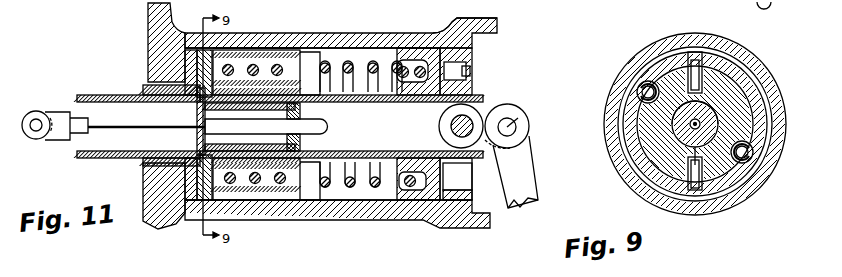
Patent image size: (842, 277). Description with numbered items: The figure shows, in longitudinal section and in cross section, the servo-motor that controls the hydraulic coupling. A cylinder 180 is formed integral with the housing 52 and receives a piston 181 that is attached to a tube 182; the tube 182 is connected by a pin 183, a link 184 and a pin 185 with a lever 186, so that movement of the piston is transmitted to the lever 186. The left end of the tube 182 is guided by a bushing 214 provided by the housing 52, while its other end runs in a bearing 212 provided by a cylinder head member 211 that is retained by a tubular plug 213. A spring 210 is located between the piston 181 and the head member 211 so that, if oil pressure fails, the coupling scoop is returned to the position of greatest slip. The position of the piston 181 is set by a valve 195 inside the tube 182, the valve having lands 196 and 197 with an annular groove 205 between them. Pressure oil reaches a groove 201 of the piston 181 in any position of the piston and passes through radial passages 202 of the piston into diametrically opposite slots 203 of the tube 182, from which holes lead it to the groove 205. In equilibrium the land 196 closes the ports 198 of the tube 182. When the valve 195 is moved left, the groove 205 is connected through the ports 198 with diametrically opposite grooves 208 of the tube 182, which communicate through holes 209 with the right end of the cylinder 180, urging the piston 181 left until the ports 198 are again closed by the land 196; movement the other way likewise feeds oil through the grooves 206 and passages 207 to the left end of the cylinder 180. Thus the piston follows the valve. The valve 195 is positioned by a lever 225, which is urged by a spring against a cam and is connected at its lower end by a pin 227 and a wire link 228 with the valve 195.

In FIG. 11, the housing 52 is at (160, 226).
In FIG. 9, the housing 52 is at (749, 263).
In FIG. 11, the cylinder 180 is at (375, 212).
In FIG. 9, the cylinder 180 is at (722, 40).
In FIG. 11, the piston 181 is at (323, 47).
In FIG. 9, the piston 181 is at (760, 80).
In FIG. 11, the tube 182 is at (108, 95).
In FIG. 11, the pin 183 is at (450, 126).
In FIG. 11, the link 184 is at (512, 121).
In FIG. 11, the pin 185 is at (517, 122).
In FIG. 11, the lever 186 is at (515, 198).
In FIG. 11, the valve 195 is at (322, 128).
In FIG. 11, the land 196 is at (205, 146).
In FIG. 9, the land 196 is at (712, 198).
In FIG. 11, the land 197 is at (298, 142).
In FIG. 11, the ports 198 is at (197, 113).
In FIG. 9, the ports 198 is at (735, 124).
In FIG. 11, the groove 201 is at (262, 47).
In FIG. 9, the groove 201 is at (742, 66).
In FIG. 9, the radial passages 202 is at (678, 58).
In FIG. 9, the slots 203 is at (695, 55).
In FIG. 11, the annular groove 205 is at (285, 110).
In FIG. 9, the grooves 206 is at (640, 85).
In FIG. 9, the passages 207 is at (640, 93).
In FIG. 11, the grooves 208 is at (190, 85).
In FIG. 9, the grooves 208 is at (730, 104).
In FIG. 11, the holes 209 is at (318, 66).
In FIG. 11, the spring 210 is at (468, 72).
In FIG. 11, the cylinder head member 211 is at (438, 60).
In FIG. 11, the bearing 212 is at (430, 88).
In FIG. 11, the tubular plug 213 is at (475, 40).
In FIG. 11, the bushing 214 is at (150, 164).
In FIG. 11, the lever 225 is at (45, 112).
In FIG. 11, the pin 227 is at (36, 131).
In FIG. 11, the wire link 228 is at (146, 118).
In FIG. 9, the wire link 228 is at (688, 125).